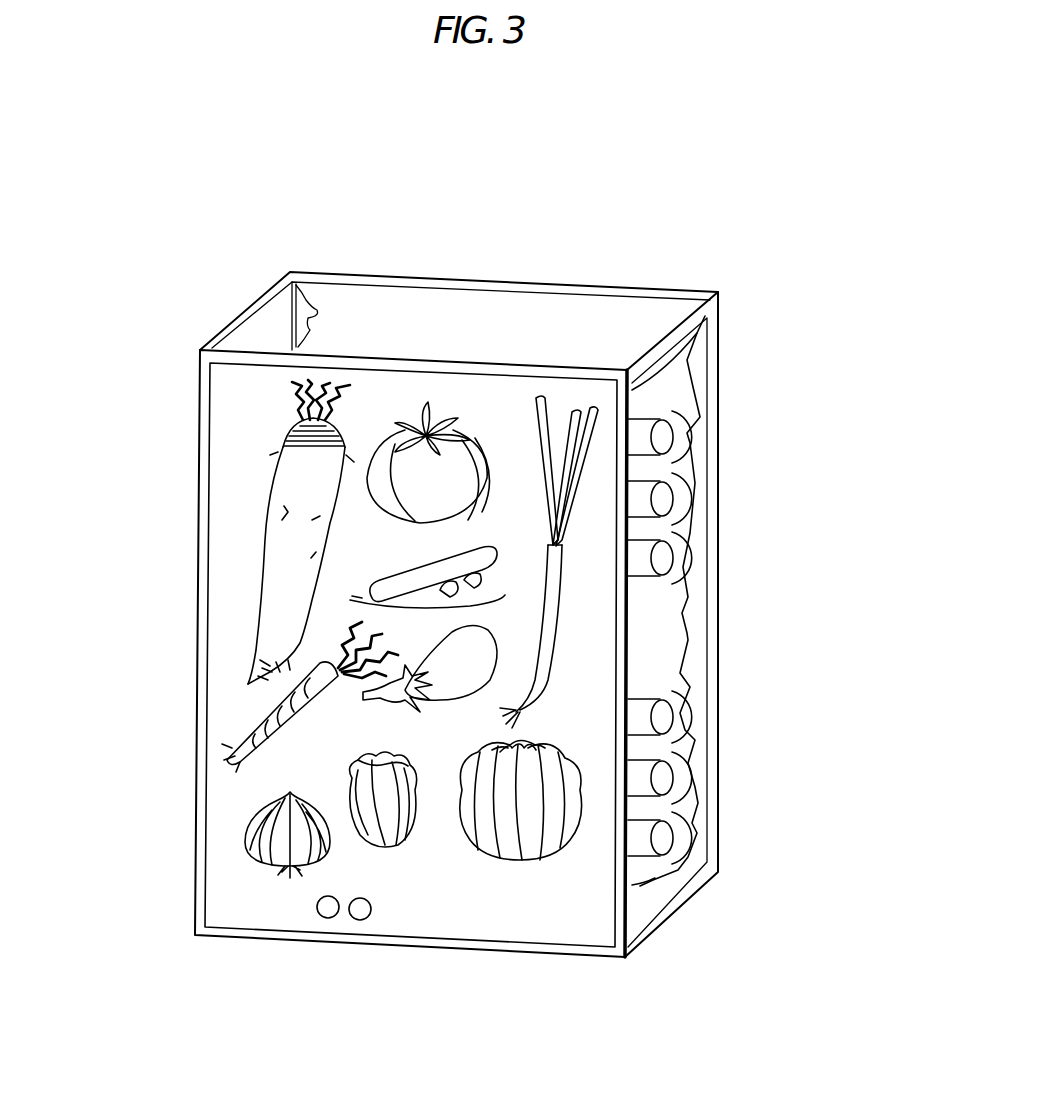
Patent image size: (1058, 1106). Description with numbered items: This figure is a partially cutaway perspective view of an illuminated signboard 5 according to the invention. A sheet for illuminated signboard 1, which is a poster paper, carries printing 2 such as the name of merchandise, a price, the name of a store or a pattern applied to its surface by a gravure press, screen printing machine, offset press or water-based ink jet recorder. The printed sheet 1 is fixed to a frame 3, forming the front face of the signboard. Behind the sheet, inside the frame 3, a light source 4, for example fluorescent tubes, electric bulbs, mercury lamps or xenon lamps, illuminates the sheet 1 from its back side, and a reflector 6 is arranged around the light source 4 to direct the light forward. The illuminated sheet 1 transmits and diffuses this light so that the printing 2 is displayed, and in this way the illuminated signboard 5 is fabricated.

The sheet for illuminated signboard 1 is at (232, 467).
The printing 2 is at (270, 623).
The frame 3 is at (200, 352).
The light source 4 is at (647, 423).
The illuminated signboard 5 is at (440, 228).
The reflector 6 is at (683, 441).